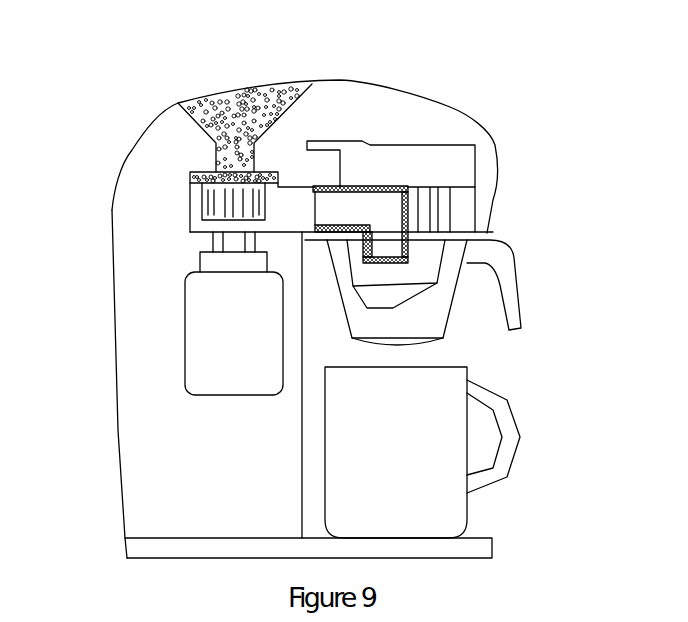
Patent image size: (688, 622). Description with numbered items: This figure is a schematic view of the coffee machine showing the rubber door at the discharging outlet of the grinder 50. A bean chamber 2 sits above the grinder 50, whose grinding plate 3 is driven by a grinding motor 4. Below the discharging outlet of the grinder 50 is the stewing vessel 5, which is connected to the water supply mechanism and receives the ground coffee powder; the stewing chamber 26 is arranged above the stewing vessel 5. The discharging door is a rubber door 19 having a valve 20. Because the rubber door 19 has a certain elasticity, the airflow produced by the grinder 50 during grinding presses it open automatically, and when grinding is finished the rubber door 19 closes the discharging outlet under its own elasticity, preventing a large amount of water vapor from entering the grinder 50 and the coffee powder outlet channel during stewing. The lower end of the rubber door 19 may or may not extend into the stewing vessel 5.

The bean chamber 2 is at (249, 92).
The grinding plate 3 is at (190, 188).
The grinding motor 4 is at (233, 380).
The stewing vessel 5 is at (432, 325).
The rubber door 19 is at (408, 208).
The valve 20 is at (372, 255).
The stewing chamber 26 is at (413, 177).
The grinder 50 is at (190, 207).